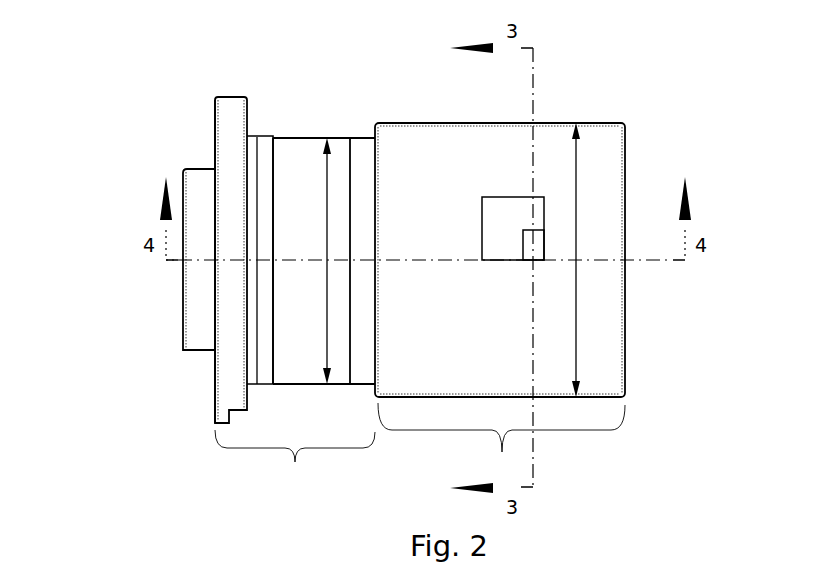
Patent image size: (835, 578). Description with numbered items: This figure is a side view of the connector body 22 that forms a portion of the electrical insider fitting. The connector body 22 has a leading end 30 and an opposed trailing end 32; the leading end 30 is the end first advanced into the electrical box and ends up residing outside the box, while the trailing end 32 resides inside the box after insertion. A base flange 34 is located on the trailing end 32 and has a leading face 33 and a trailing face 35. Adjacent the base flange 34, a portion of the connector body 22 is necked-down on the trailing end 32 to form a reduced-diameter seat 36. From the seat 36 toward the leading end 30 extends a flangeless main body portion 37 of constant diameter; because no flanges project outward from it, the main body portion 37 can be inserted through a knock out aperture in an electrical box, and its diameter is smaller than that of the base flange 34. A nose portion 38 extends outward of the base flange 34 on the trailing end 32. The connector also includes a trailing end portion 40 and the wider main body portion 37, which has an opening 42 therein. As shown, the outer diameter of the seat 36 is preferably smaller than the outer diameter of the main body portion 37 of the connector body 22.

The connector body 22 is at (138, 76).
The leading end 30 is at (625, 325).
The trailing end 32 is at (182, 335).
The leading face 33 is at (248, 120).
The base flange 34 is at (232, 97).
The trailing face 35 is at (215, 122).
The reduced-diameter seat 36 is at (308, 137).
The flangeless main body portion 37 is at (501, 441).
The nose portion 38 is at (200, 354).
The trailing end portion 40 is at (295, 459).
The opening 42 is at (490, 213).